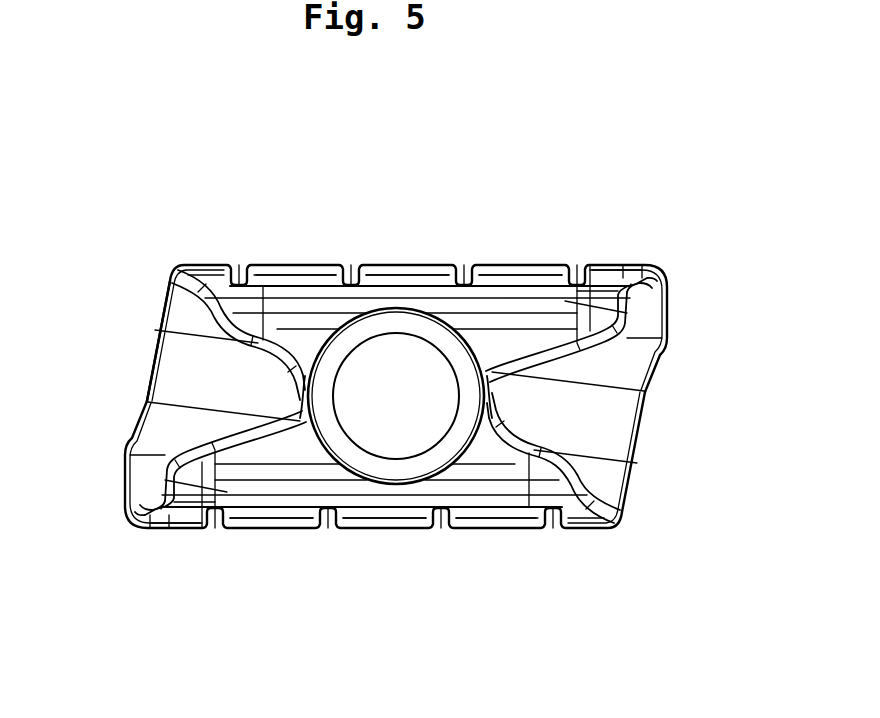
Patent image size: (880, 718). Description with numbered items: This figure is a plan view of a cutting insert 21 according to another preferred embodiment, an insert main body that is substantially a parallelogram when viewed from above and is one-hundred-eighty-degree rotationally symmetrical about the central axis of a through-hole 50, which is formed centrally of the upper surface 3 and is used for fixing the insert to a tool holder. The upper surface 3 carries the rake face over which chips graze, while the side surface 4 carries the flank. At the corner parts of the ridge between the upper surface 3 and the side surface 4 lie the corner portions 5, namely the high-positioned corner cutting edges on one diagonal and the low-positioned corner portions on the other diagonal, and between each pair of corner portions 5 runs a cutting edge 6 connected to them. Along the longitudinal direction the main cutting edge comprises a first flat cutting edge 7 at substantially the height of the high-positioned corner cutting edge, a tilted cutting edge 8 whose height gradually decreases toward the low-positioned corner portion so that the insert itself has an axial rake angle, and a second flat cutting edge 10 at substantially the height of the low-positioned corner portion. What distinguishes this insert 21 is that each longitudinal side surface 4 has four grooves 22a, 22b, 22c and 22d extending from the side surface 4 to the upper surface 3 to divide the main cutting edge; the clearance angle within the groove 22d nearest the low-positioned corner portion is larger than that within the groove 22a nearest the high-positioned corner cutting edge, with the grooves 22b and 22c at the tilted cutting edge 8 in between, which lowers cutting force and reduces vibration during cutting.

The upper surface 3 is at (198, 376).
The side surface 4 is at (147, 392).
The corner portion 5 is at (178, 265).
The cutting edge 6 is at (180, 630).
The first flat cutting edge 7 is at (624, 263).
The tilted cutting edge 8 is at (295, 263).
The second flat cutting edge 10 is at (197, 263).
The insert 21 is at (642, 482).
The groove 22a is at (574, 284).
The groove 22b is at (464, 284).
The groove 22c is at (353, 284).
The groove 22d is at (238, 284).
The through-hole 50 is at (408, 410).